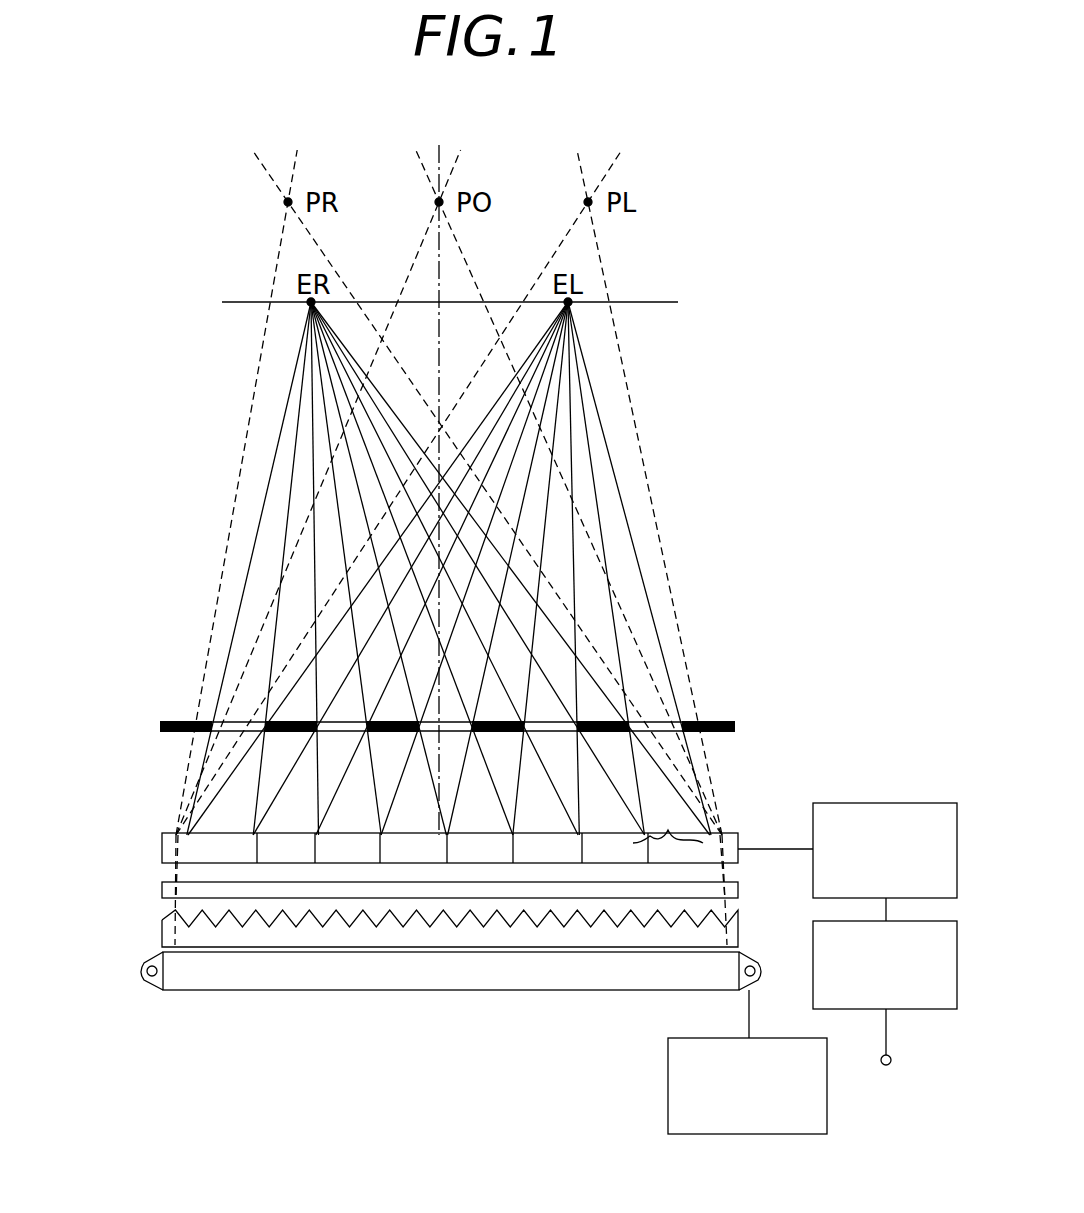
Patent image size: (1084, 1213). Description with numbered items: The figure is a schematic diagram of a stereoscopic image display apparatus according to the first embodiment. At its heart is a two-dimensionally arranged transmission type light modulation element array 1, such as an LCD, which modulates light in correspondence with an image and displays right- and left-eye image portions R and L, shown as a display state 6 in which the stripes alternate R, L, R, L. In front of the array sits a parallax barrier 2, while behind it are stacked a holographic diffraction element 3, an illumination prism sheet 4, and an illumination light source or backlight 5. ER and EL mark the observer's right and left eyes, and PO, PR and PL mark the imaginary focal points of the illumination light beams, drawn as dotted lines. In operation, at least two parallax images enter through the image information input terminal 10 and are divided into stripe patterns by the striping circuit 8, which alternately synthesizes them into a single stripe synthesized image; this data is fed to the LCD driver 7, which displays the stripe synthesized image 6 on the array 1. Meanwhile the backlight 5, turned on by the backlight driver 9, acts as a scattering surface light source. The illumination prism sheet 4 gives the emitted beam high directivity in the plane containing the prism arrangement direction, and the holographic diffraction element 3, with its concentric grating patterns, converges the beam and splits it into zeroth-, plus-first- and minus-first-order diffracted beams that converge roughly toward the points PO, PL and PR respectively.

The transmission type light modulation element array 1 is at (162, 848).
The parallax barrier 2 is at (160, 727).
The holographic diffraction element 3 is at (162, 890).
The illumination prism sheet 4 is at (162, 931).
The illumination light source (backlight) 5 is at (185, 990).
The display state (stripe synthesized image) 6 is at (668, 811).
The LCD driver 7 is at (813, 820).
The striping circuit 8 is at (813, 945).
The backlight driver 9 is at (775, 1038).
The image information input terminal 10 is at (886, 1065).